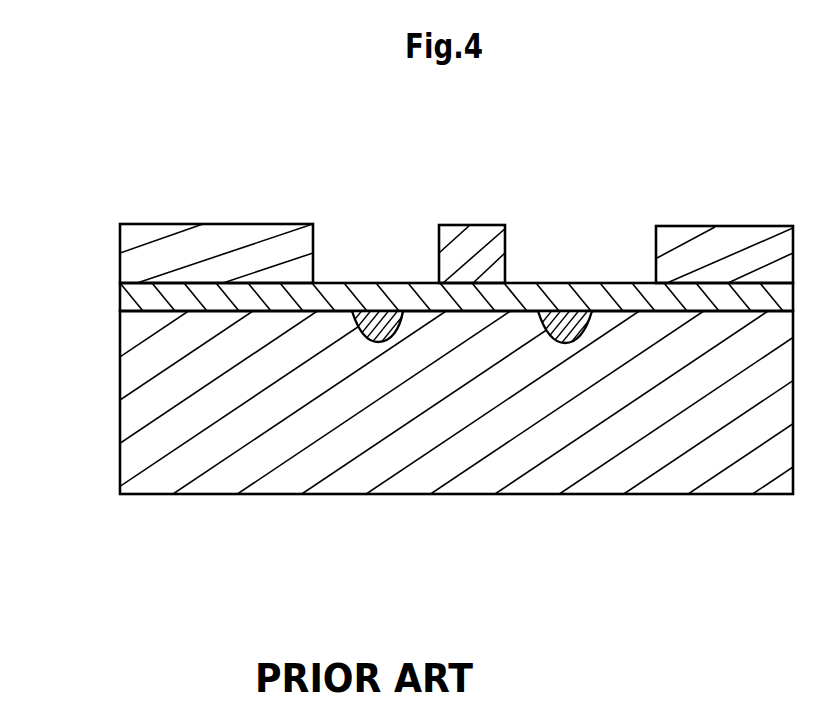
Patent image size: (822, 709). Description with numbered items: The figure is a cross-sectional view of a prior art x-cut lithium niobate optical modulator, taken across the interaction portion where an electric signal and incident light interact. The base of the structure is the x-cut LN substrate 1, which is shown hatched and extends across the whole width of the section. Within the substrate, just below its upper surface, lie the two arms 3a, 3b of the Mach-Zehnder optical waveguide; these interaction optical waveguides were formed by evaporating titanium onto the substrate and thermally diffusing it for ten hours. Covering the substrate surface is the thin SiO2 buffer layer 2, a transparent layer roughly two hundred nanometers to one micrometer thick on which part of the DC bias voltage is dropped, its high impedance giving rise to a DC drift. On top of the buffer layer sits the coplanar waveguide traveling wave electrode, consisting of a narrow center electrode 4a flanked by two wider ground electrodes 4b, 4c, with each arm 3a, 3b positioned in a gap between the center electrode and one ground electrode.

The x-cut LN substrate 1 is at (120, 362).
The SiO2 buffer layer 2 is at (120, 297).
The arm 3a is at (377, 342).
The arm 3b is at (565, 343).
The center electrode 4a is at (478, 225).
The ground electrode 4b is at (265, 224).
The ground electrode 4c is at (752, 226).